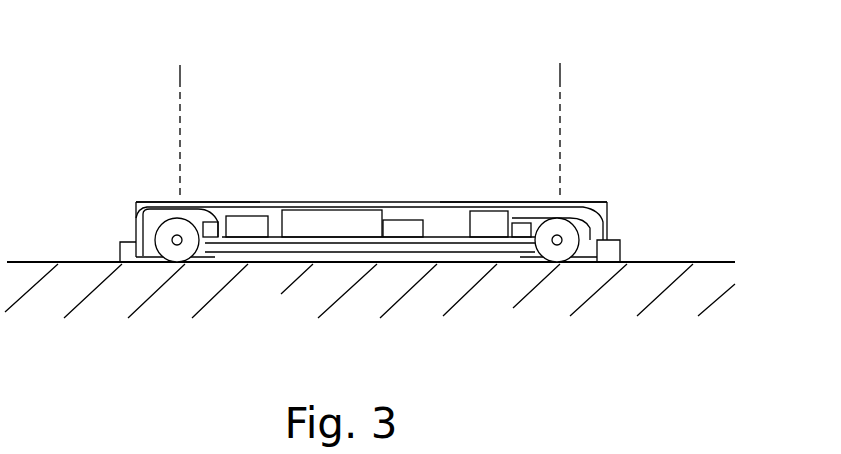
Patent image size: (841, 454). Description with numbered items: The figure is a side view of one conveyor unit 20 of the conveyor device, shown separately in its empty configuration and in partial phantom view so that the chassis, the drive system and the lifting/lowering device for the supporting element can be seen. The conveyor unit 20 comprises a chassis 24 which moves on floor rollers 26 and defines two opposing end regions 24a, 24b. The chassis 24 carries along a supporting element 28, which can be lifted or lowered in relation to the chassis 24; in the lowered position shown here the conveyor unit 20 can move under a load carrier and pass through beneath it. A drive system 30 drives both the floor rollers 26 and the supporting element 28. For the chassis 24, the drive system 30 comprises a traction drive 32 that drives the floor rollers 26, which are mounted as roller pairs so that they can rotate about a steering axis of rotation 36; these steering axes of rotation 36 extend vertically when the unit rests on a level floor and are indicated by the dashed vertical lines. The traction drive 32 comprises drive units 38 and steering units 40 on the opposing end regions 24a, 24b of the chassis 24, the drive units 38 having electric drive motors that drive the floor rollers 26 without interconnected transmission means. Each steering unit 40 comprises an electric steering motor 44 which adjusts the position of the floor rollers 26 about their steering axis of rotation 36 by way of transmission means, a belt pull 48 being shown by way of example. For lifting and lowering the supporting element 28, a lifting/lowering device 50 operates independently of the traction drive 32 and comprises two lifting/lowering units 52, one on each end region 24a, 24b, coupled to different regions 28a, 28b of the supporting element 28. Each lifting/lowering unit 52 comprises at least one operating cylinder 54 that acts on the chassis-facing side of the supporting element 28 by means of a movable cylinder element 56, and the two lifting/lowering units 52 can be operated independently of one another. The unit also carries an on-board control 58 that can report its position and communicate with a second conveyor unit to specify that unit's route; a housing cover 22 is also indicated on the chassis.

The conveyor unit 20 is at (648, 110).
The housing cover 22 is at (613, 223).
The chassis 24 is at (398, 250).
The end region 24a is at (186, 168).
The end region 24b is at (568, 183).
The floor roller 26 is at (168, 250).
The supporting element 28 is at (402, 199).
The region of the supporting element 28a is at (237, 197).
The region of the supporting element 28b is at (474, 194).
The drive system 30 is at (647, 174).
The traction drive 32 is at (133, 203).
The steering axis of rotation 36 is at (178, 75).
The drive unit 38 is at (153, 197).
The steering unit 40 is at (185, 198).
The electric steering motor 44 is at (218, 230).
The belt pull 48 is at (134, 223).
The lifting/lowering device 50 is at (497, 194).
The lifting/lowering unit 52 is at (267, 191).
The operating cylinder 54 is at (246, 234).
The movable cylinder element 56 is at (286, 204).
The on-board control 58 is at (413, 233).